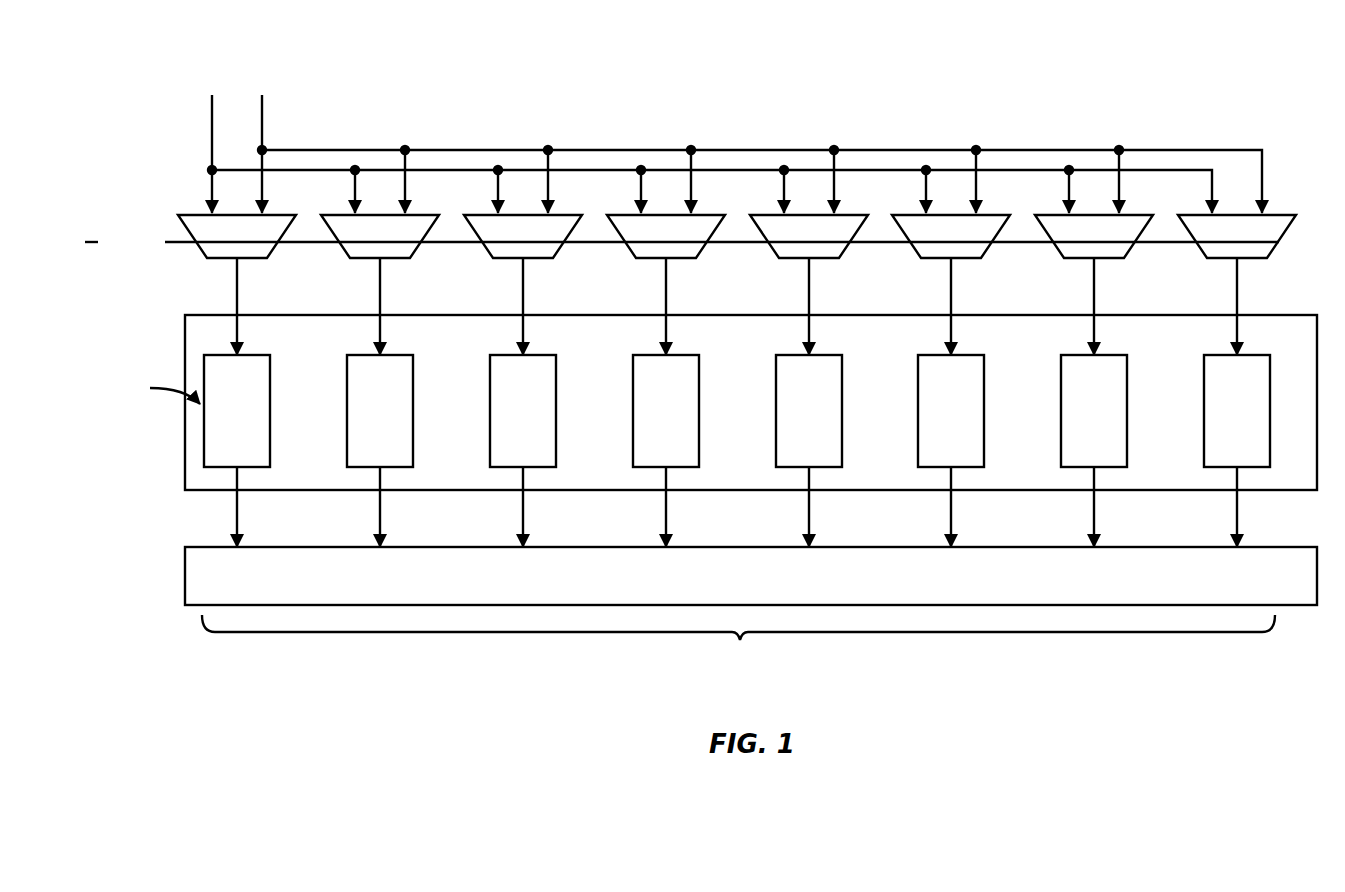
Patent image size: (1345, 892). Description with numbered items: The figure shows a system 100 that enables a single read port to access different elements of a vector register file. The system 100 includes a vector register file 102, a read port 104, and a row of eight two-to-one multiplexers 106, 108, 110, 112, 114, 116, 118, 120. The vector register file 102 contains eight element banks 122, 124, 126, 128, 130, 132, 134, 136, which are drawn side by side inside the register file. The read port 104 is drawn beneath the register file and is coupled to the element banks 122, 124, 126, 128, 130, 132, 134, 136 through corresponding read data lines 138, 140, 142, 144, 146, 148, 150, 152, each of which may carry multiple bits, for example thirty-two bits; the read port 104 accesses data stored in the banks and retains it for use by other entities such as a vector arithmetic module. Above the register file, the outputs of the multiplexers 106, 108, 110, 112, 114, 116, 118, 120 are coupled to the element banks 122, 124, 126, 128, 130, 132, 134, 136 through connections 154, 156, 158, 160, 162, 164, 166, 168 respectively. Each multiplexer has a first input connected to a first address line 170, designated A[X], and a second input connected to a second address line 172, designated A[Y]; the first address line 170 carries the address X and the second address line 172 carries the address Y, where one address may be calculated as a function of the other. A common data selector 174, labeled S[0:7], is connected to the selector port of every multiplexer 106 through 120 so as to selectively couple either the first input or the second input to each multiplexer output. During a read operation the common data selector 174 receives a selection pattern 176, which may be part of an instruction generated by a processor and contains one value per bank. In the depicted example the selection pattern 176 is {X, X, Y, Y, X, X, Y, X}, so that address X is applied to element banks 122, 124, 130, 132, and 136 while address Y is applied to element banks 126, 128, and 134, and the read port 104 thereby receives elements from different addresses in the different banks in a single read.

The system 100 is at (701, 353).
The vector register file 102 is at (185, 456).
The read port 104 is at (184, 601).
The multiplexer 106 is at (220, 259).
The multiplexer 108 is at (363, 259).
The multiplexer 110 is at (506, 259).
The multiplexer 112 is at (649, 259).
The multiplexer 114 is at (792, 259).
The multiplexer 116 is at (934, 259).
The multiplexer 118 is at (1077, 259).
The multiplexer 120 is at (1220, 259).
The element bank 122 is at (251, 355).
The element bank 124 is at (394, 355).
The element bank 126 is at (537, 355).
The element bank 128 is at (680, 355).
The element bank 130 is at (823, 355).
The element bank 132 is at (965, 355).
The element bank 134 is at (1108, 355).
The element bank 136 is at (1251, 355).
The read data line 138 is at (237, 516).
The read data line 140 is at (380, 516).
The read data line 142 is at (523, 516).
The read data line 144 is at (666, 516).
The read data line 146 is at (809, 516).
The read data line 148 is at (951, 516).
The read data line 150 is at (1094, 516).
The read data line 152 is at (1237, 516).
The connection 154 is at (237, 298).
The connection 156 is at (380, 298).
The connection 158 is at (523, 298).
The connection 160 is at (666, 298).
The connection 162 is at (809, 298).
The connection 164 is at (951, 298).
The connection 166 is at (1094, 298).
The connection 168 is at (1237, 298).
The first address line 170 is at (210, 112).
The second address line 172 is at (320, 149).
The common data selector 174 is at (133, 229).
The selection pattern 176 is at (1010, 99).